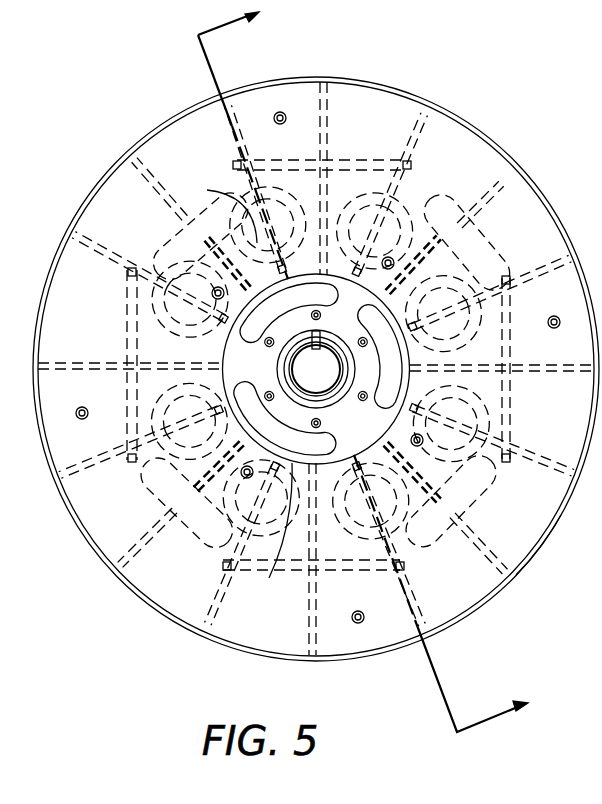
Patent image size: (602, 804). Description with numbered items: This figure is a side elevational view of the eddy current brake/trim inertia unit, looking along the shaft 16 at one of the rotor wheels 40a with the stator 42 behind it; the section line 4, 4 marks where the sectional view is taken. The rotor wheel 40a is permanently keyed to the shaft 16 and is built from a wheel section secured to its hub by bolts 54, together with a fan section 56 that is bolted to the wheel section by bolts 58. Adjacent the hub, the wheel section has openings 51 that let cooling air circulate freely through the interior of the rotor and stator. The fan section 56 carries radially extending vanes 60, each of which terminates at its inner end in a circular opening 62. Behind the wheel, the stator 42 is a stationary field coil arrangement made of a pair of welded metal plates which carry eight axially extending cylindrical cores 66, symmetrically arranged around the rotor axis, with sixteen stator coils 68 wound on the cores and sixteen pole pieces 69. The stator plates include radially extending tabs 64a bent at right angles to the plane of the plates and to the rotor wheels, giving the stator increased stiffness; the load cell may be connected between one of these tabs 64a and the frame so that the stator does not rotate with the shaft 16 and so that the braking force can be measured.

The section line 4- 4 is at (373, 366).
The shaft 16 is at (325, 378).
The rotor wheel 40a is at (492, 150).
The stator 42 is at (568, 232).
The openings 51 is at (269, 311).
The bolts 54 is at (322, 313).
The fan section 56 is at (535, 526).
The bolts 58 is at (280, 112).
The vanes 60 is at (409, 168).
The circular openings 62 is at (275, 533).
The tabs 64a is at (343, 162).
The cylindrical cores 66 is at (212, 190).
The stator coils 68 is at (235, 166).
The pole pieces 69 is at (433, 203).